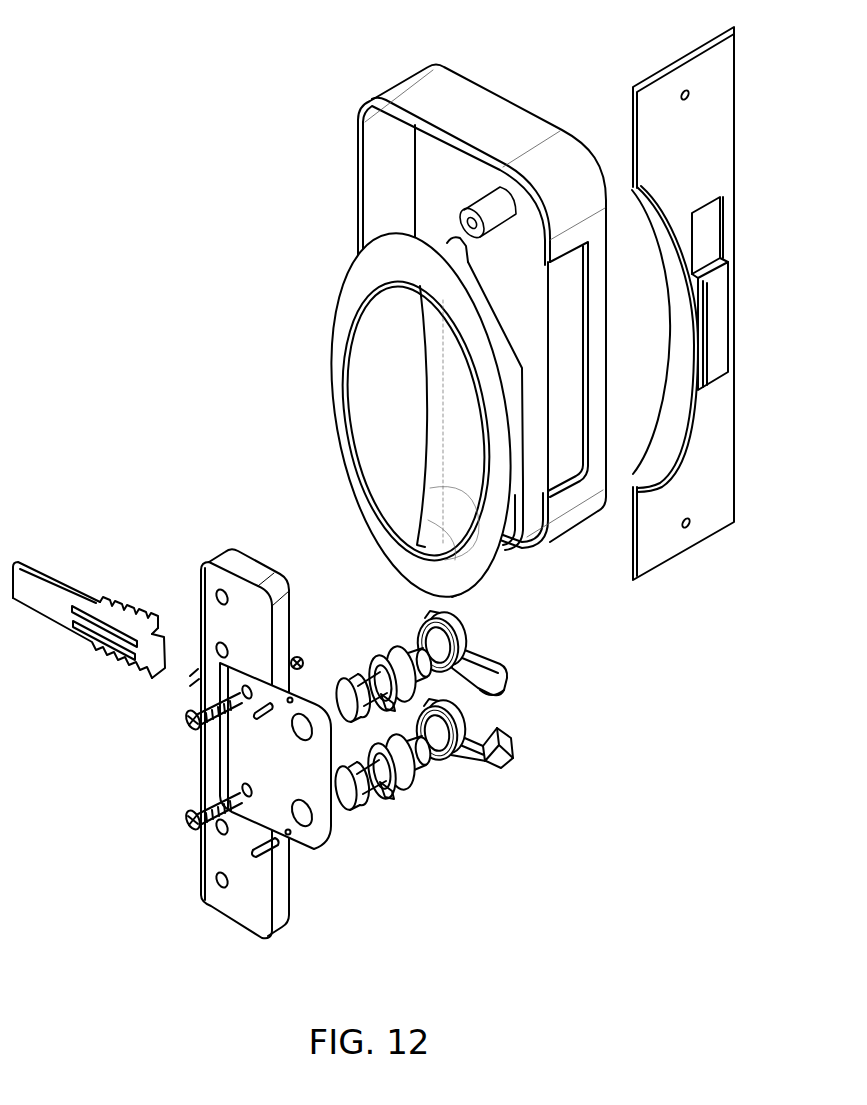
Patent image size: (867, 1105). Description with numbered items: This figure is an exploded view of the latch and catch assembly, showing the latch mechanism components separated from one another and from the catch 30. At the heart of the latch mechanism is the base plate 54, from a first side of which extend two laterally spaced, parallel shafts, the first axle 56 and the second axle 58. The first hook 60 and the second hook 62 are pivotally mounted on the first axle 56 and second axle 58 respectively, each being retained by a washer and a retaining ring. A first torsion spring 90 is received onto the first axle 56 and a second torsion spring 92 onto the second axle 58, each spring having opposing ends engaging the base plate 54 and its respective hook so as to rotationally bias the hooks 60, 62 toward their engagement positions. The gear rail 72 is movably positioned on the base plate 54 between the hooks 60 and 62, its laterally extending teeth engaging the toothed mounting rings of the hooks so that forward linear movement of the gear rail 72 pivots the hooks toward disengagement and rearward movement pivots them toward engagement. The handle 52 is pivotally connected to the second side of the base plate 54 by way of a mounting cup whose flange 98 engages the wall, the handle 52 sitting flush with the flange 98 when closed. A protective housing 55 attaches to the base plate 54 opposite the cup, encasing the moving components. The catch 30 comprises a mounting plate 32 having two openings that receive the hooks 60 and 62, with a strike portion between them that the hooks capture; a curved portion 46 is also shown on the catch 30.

The catch 30 is at (736, 62).
The mounting plate 32 is at (720, 105).
The curved cover portion 46 is at (668, 432).
The handle 52 is at (382, 398).
The base plate 54 is at (233, 912).
The protective housing 55 is at (482, 101).
The first axle 56 is at (370, 785).
The second axle 58 is at (374, 690).
The first hook 60 is at (483, 762).
The second hook 62 is at (490, 661).
The gear rail 72 is at (58, 586).
The first torsion spring 90 is at (443, 760).
The second torsion spring 92 is at (418, 622).
The flange 98 is at (366, 262).